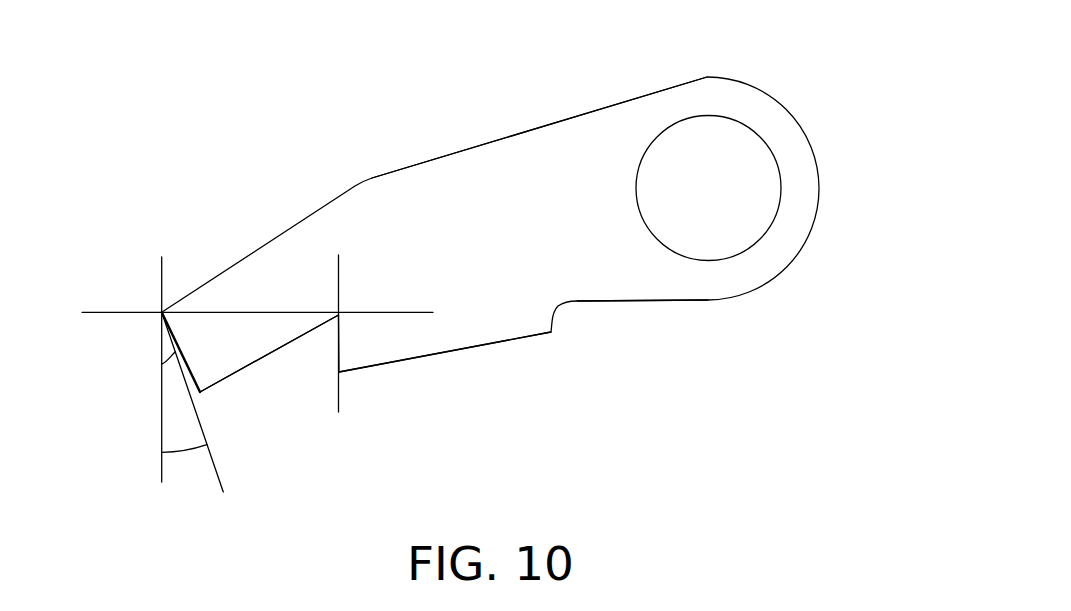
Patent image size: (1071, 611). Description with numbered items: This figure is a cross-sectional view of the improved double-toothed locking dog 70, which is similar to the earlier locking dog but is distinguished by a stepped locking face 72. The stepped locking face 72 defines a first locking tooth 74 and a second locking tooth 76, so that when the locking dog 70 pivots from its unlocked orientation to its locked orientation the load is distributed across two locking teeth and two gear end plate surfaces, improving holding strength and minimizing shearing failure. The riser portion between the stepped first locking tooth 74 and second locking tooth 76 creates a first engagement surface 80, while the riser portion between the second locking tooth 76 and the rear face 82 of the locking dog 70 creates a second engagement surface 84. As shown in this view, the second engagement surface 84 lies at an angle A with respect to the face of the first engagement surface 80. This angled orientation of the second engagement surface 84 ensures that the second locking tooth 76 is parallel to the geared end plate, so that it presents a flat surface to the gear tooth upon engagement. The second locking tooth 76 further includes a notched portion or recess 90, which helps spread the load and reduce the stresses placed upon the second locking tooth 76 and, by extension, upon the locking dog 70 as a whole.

The locking dog 70 is at (517, 112).
The stepped locking face 72 is at (668, 305).
The first locking tooth 74 is at (502, 342).
The second locking tooth 76 is at (270, 353).
The first engagement surface 80 is at (338, 349).
The rear face 82 is at (400, 169).
The second engagement surface 84 is at (162, 364).
The recess 90 is at (190, 383).
The angle A is at (195, 458).